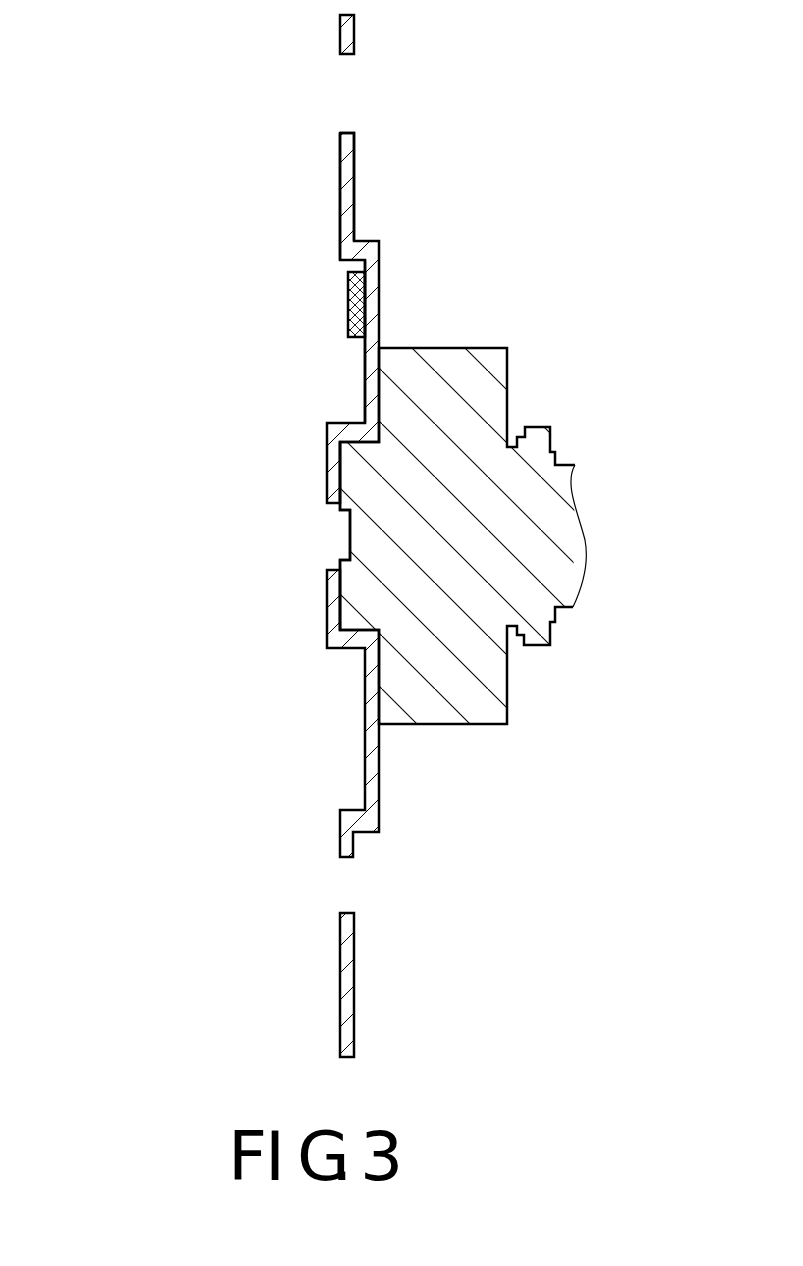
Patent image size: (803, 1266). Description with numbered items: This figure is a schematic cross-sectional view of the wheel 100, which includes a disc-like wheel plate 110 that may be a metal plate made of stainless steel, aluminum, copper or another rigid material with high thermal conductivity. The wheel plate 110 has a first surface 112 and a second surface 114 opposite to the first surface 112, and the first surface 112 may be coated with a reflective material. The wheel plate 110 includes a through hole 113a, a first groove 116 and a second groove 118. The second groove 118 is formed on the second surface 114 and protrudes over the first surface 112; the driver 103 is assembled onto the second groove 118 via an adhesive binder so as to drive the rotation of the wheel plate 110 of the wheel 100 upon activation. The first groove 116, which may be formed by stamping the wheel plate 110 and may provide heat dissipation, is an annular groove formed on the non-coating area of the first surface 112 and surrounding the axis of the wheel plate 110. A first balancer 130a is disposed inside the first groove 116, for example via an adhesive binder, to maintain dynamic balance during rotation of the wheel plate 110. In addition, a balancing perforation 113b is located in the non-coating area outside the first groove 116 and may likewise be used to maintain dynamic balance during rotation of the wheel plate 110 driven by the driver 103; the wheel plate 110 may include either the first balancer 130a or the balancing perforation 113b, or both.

The wheel 100 is at (148, 123).
The driver 103 is at (462, 393).
The wheel plate 110 is at (348, 987).
The first surface 112 is at (340, 220).
The through hole 113a is at (340, 98).
The balancing perforation 113b is at (360, 887).
The second surface 114 is at (342, 215).
The first groove 116 is at (345, 381).
The second groove 118 is at (363, 483).
The first balancer 130a is at (348, 320).